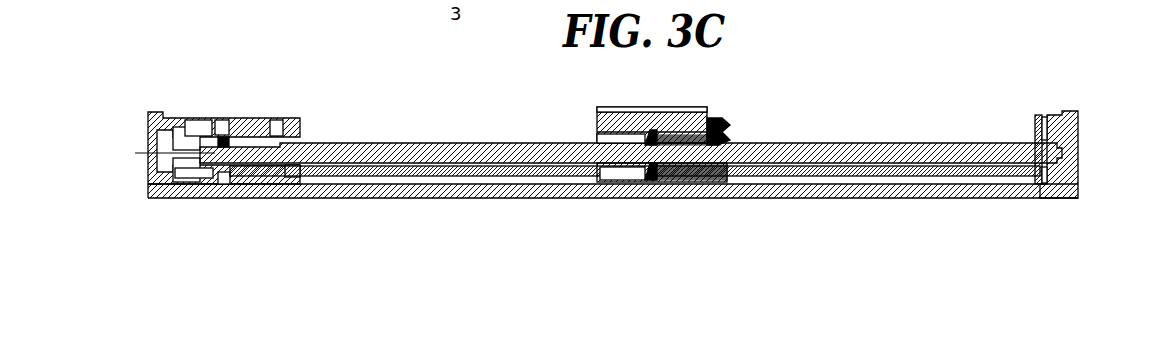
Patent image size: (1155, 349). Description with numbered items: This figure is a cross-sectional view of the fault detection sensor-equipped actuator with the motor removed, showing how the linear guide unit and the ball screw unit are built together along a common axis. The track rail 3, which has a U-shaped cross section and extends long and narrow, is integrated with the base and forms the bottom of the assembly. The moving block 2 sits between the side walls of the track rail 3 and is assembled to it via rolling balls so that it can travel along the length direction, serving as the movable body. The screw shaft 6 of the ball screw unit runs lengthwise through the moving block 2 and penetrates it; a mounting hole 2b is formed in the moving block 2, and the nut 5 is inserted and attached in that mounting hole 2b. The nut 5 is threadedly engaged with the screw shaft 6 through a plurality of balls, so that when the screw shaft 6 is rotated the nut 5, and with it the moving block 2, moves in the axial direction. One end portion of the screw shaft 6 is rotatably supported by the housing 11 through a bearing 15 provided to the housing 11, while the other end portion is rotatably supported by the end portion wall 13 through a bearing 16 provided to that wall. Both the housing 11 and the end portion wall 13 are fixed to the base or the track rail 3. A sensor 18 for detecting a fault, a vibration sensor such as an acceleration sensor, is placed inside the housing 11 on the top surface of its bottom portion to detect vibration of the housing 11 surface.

The moving block 2 is at (612, 118).
The mounting hole 2b is at (600, 138).
The track rail 3 is at (522, 200).
The nut 5 is at (680, 135).
The screw shaft 6 is at (430, 143).
The housing 11 is at (196, 120).
The end portion wall 13 is at (1078, 188).
The bearing 15 is at (265, 117).
The bearing 16 is at (1050, 114).
The sensor 18 is at (206, 200).